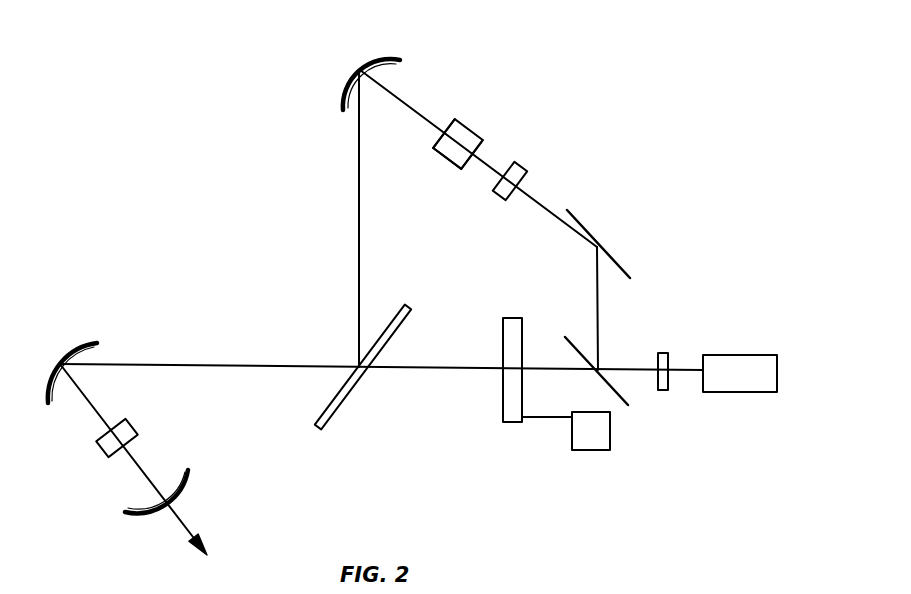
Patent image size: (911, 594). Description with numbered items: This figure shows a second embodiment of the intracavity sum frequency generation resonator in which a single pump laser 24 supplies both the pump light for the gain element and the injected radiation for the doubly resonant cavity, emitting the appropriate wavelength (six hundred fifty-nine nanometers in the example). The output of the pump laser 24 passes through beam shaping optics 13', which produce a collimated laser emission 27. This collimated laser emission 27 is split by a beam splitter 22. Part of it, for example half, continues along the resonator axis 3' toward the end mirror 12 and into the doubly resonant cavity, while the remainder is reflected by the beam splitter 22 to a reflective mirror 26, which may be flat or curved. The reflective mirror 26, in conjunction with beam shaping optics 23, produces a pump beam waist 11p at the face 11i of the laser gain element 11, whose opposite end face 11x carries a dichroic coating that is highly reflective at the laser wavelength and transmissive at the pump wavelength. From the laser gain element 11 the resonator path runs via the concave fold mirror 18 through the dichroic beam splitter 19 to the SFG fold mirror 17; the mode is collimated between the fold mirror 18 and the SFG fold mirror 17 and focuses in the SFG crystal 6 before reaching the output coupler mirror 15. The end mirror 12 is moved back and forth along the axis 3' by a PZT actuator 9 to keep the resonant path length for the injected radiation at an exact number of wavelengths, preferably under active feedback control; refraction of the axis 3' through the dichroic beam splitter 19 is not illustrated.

The fold mirror 18 is at (358, 65).
The laser gain element 11 is at (472, 127).
The interior face 11i is at (443, 128).
The end face 11x is at (482, 147).
The pump beam waist 11p is at (472, 155).
The beam shaping optics 23 is at (517, 160).
The reflective mirror 26 is at (590, 232).
The beam splitter 22 is at (566, 337).
The collimated laser emission 27 is at (623, 367).
The beam shaping optics 13' is at (691, 351).
The pump laser 24 is at (743, 355).
The end mirror 12 is at (513, 423).
The PZT actuator 9 is at (592, 450).
The SFG fold mirror 17 is at (53, 358).
The SFG crystal 6 is at (100, 447).
The output coupler mirror 15 is at (158, 517).
The dichroic beam splitter 19 is at (320, 427).
The resonator axis 3' is at (381, 400).